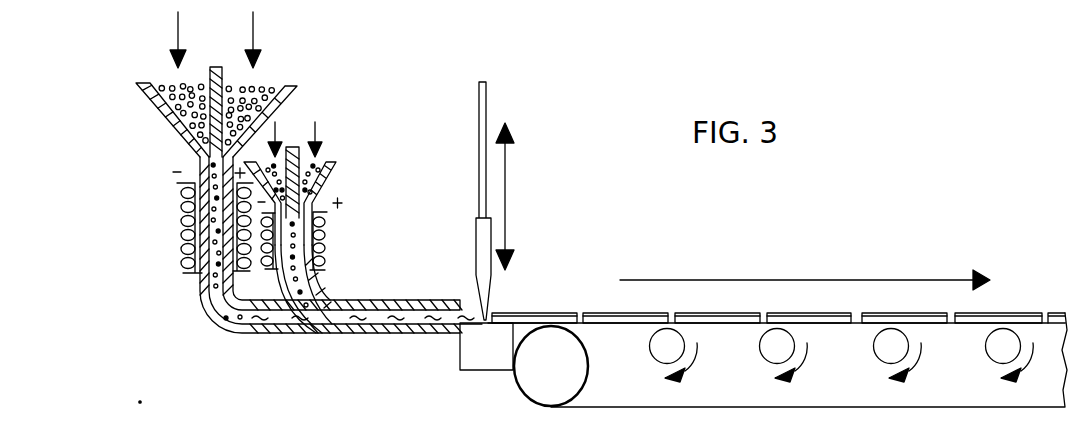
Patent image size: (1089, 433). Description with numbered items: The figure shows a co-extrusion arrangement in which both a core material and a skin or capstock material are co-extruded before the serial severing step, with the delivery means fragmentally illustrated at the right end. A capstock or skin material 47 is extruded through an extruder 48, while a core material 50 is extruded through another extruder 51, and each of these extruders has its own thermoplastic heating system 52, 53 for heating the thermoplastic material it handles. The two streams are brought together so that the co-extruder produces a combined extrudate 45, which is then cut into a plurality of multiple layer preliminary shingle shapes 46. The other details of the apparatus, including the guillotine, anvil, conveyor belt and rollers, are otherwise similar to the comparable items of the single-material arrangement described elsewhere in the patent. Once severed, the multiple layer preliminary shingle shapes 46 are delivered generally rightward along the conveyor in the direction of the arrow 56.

The extrudate 45 is at (470, 305).
The multiple layer preliminary shingle shapes 46 is at (546, 312).
The capstock or skin material 47 is at (330, 152).
The extruder 48 is at (325, 203).
The core material 50 is at (263, 84).
The extruder 51 is at (292, 100).
The thermoplastic heating system 52 is at (325, 257).
The thermoplastic heating system 53 is at (183, 237).
The arrow 56 is at (853, 282).